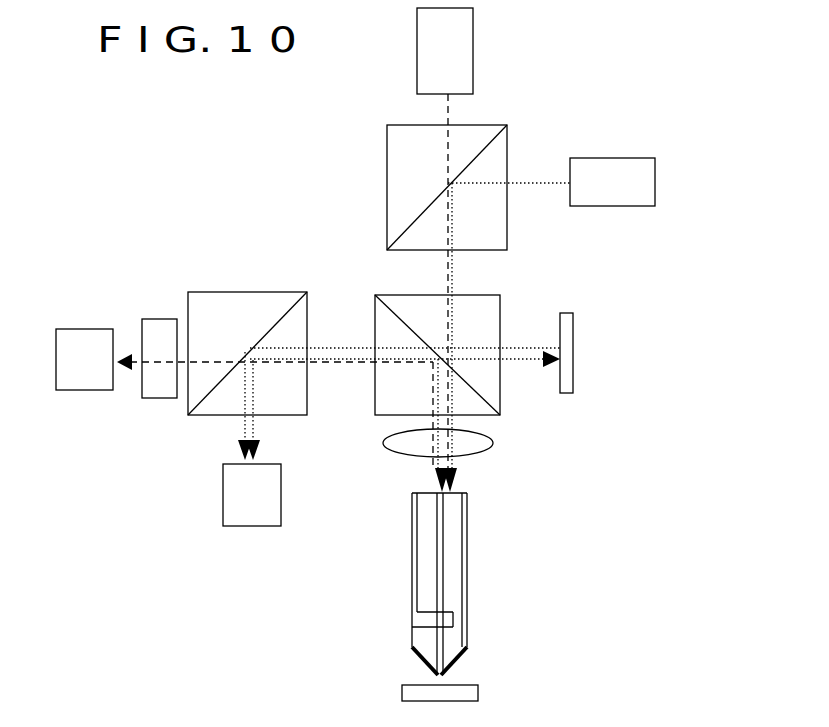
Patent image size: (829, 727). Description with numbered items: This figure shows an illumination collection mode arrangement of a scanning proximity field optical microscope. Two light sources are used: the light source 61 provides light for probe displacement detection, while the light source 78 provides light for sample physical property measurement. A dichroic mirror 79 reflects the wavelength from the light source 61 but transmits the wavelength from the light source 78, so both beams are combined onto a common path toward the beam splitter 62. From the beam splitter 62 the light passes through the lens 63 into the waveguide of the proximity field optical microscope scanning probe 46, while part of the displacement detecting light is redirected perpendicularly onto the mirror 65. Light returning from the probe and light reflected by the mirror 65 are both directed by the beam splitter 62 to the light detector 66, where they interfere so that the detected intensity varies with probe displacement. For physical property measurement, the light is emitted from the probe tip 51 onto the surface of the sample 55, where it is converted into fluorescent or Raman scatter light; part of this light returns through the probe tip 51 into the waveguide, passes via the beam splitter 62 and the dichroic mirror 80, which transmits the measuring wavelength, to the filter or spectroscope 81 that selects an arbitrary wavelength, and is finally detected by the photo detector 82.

The light source 78 is at (430, 57).
The dichroic mirror 79 is at (413, 222).
The light source 61 is at (600, 175).
The beam splitter 62 is at (391, 306).
The dichroic mirror 80 is at (293, 300).
The filter or spectroscope 81 is at (155, 332).
The photo detector 82 is at (75, 363).
The light detector 66 is at (243, 508).
The mirror 65 is at (568, 322).
The lens 63 is at (478, 442).
The proximity field optical microscope scanning probe 46 is at (428, 571).
The probe tip 51 is at (440, 677).
The sample 55 is at (468, 698).